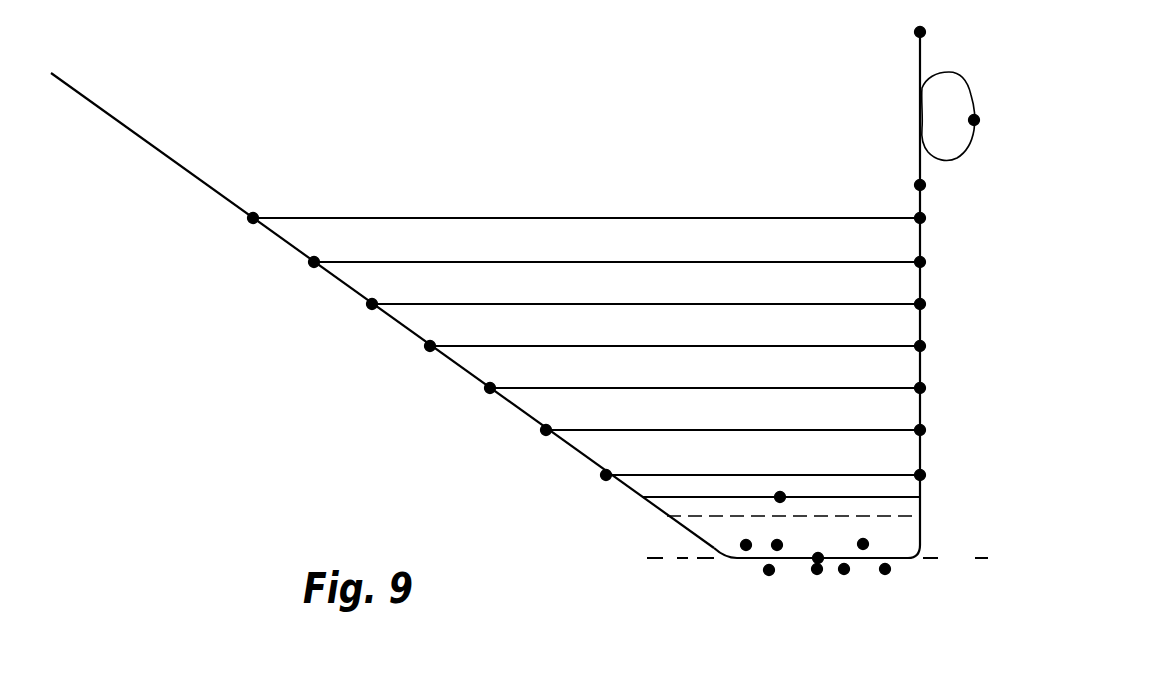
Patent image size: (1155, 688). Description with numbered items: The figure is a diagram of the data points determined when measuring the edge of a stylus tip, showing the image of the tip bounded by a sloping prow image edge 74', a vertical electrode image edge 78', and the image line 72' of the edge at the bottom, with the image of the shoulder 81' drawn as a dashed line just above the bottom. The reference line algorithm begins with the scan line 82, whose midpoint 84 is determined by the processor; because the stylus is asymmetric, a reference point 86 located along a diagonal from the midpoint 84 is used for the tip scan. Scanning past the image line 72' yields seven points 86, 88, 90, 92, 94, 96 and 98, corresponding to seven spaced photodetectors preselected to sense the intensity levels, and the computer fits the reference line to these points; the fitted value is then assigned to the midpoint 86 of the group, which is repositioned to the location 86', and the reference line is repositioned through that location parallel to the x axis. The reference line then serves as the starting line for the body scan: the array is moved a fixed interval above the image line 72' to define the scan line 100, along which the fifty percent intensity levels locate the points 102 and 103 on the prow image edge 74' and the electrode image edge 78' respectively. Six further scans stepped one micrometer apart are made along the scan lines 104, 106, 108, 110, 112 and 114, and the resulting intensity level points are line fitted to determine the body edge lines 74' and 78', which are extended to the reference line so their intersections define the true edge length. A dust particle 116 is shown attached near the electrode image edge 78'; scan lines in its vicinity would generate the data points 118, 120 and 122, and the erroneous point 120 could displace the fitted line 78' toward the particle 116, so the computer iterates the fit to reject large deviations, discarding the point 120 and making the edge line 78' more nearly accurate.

The prow image edge 74' is at (382, 310).
The electrode image edge 78' is at (945, 288).
The image line 72' is at (791, 602).
The data point 118 is at (926, 32).
The data point 122 is at (926, 185).
The dust particle 116 is at (962, 96).
The erroneous data point 120 is at (979, 120).
The scan line 114 is at (305, 218).
The scan line 112 is at (394, 262).
The scan line 110 is at (468, 304).
The scan line 108 is at (529, 346).
The scan line 106 is at (596, 388).
The scan line 104 is at (648, 430).
The scan line 100 is at (730, 475).
The line point 102 is at (602, 475).
The line point 103 is at (925, 477).
The scan line 82 is at (842, 496).
The midpoint 84 is at (780, 494).
The shoulder 81' is at (717, 525).
The data point 88 is at (746, 550).
The data point 92 is at (777, 550).
The data point 90 is at (769, 575).
The reference point 86 is at (811, 602).
The repositioned reference point value 86' is at (832, 581).
The data point 94 is at (849, 569).
The data point 98 is at (890, 569).
The data point 96 is at (868, 544).